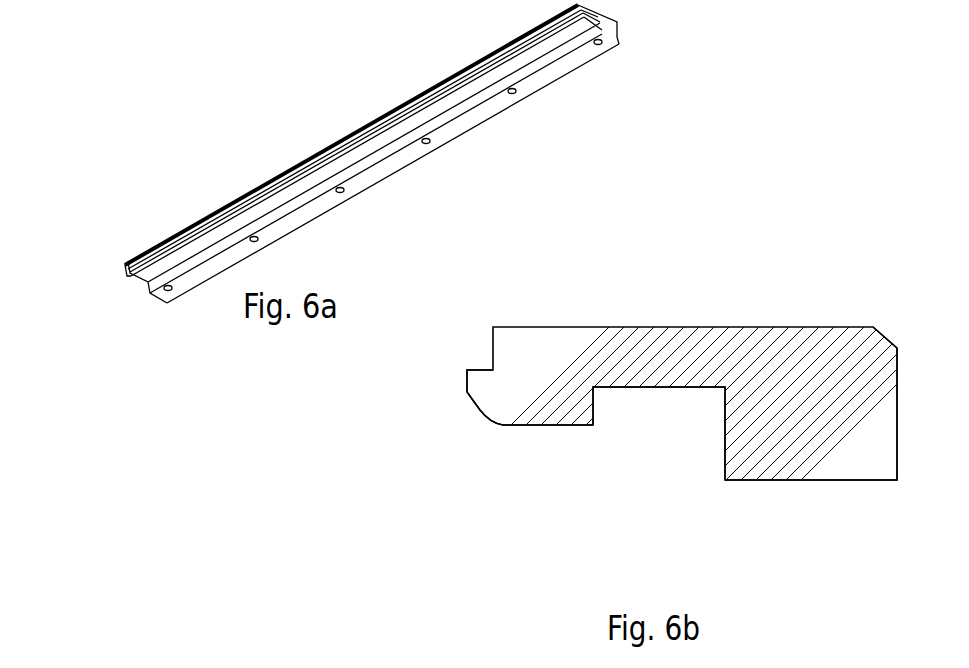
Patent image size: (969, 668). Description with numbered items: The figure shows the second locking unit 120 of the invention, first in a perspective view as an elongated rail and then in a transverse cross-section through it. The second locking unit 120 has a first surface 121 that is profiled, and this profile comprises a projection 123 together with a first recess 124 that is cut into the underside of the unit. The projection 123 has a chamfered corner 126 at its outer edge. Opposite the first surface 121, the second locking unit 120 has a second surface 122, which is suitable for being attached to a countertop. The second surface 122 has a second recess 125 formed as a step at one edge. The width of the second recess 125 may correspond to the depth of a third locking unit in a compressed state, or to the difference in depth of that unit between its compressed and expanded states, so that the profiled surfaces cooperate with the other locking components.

In FIG. 6A, the second locking unit 120 is at (660, 177).
In FIG. 6B, the second locking unit 120 is at (562, 348).
In FIG. 6B, the first surface 121 is at (800, 480).
In FIG. 6B, the second surface 122 is at (723, 327).
In FIG. 6B, the projection 123 is at (548, 426).
In FIG. 6B, the first recess 124 is at (640, 387).
In FIG. 6B, the second recess 125 is at (493, 370).
In FIG. 6B, the chamfered corner 126 is at (480, 408).